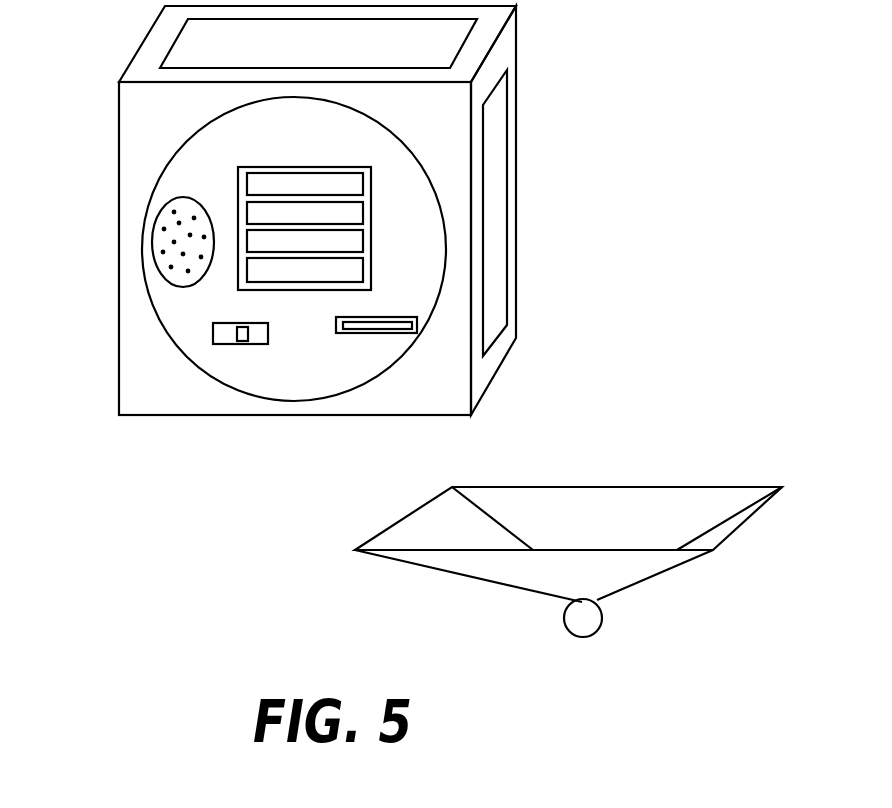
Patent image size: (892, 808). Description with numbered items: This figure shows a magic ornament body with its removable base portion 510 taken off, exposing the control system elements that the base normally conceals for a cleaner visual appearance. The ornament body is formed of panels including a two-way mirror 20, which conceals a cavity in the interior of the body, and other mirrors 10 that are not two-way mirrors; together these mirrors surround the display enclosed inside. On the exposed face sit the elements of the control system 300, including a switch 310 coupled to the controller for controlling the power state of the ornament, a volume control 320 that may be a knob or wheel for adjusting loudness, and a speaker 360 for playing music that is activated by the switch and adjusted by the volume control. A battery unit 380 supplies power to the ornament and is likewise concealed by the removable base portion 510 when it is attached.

The mirror 10 is at (497, 278).
The two-way mirror 20 is at (207, 42).
The controller 300 is at (187, 322).
The switch 310 is at (225, 344).
The volume control 320 is at (372, 333).
The speaker 360 is at (163, 243).
The battery unit 380 is at (347, 209).
The removable base portion 510 is at (612, 498).